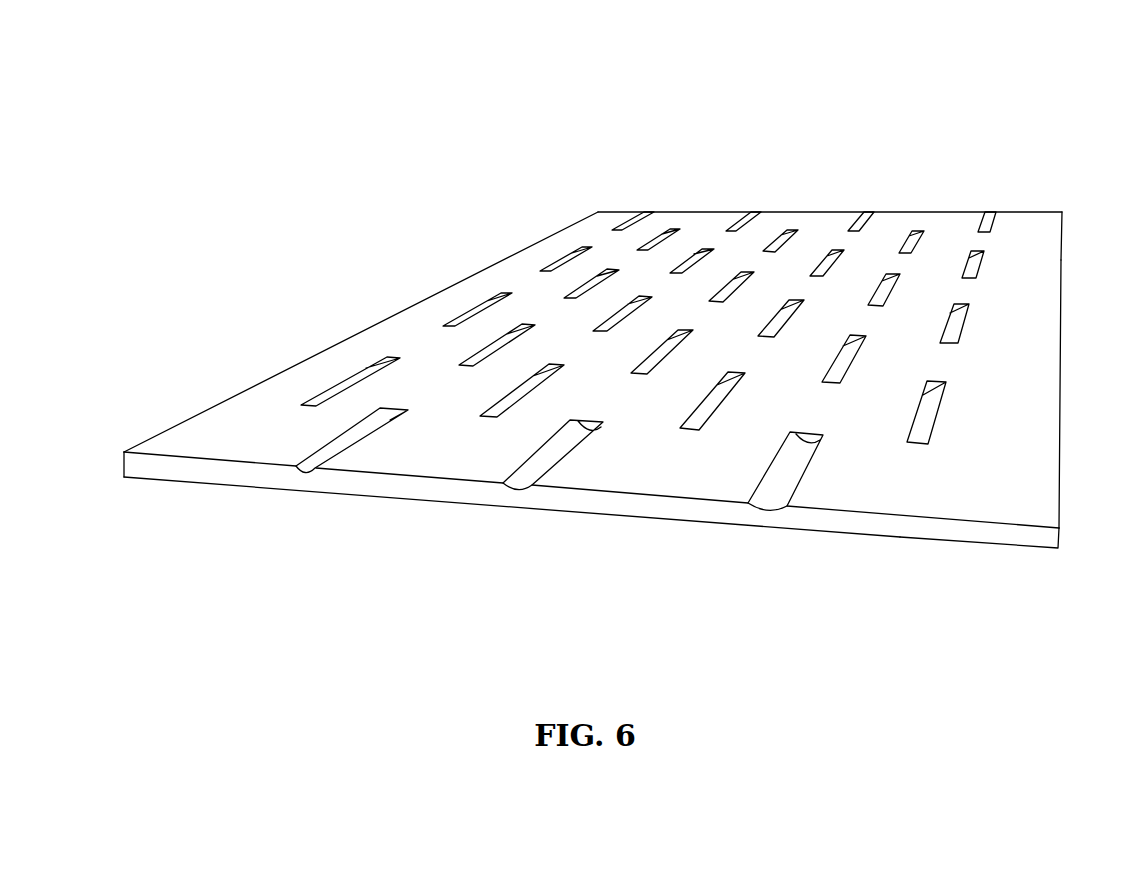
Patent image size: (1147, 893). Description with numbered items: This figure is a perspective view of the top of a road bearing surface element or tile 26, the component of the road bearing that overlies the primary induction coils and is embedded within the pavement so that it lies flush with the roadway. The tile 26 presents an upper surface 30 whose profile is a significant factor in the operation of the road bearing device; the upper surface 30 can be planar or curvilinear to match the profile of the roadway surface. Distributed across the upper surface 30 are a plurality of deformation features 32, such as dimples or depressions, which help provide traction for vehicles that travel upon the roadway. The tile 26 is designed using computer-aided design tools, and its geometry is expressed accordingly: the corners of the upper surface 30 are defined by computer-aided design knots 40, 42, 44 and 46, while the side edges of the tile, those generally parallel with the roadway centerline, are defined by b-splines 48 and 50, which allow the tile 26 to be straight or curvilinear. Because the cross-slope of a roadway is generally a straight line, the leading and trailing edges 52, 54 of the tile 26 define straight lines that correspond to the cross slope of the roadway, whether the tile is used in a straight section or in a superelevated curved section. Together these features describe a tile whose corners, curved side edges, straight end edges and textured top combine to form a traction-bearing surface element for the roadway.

The road bearing surface element 26 is at (446, 204).
The upper surface 30 is at (423, 332).
The deformation features 32 is at (300, 323).
The computer-aided design knot 40 is at (123, 450).
The computer-aided design knot 42 is at (600, 212).
The computer-aided design knot 44 is at (1062, 212).
The computer-aided design knot 46 is at (1058, 527).
The b-spline 48 is at (363, 327).
The b-spline 50 is at (1063, 320).
The leading edge 52 is at (580, 490).
The trailing edge 54 is at (823, 212).